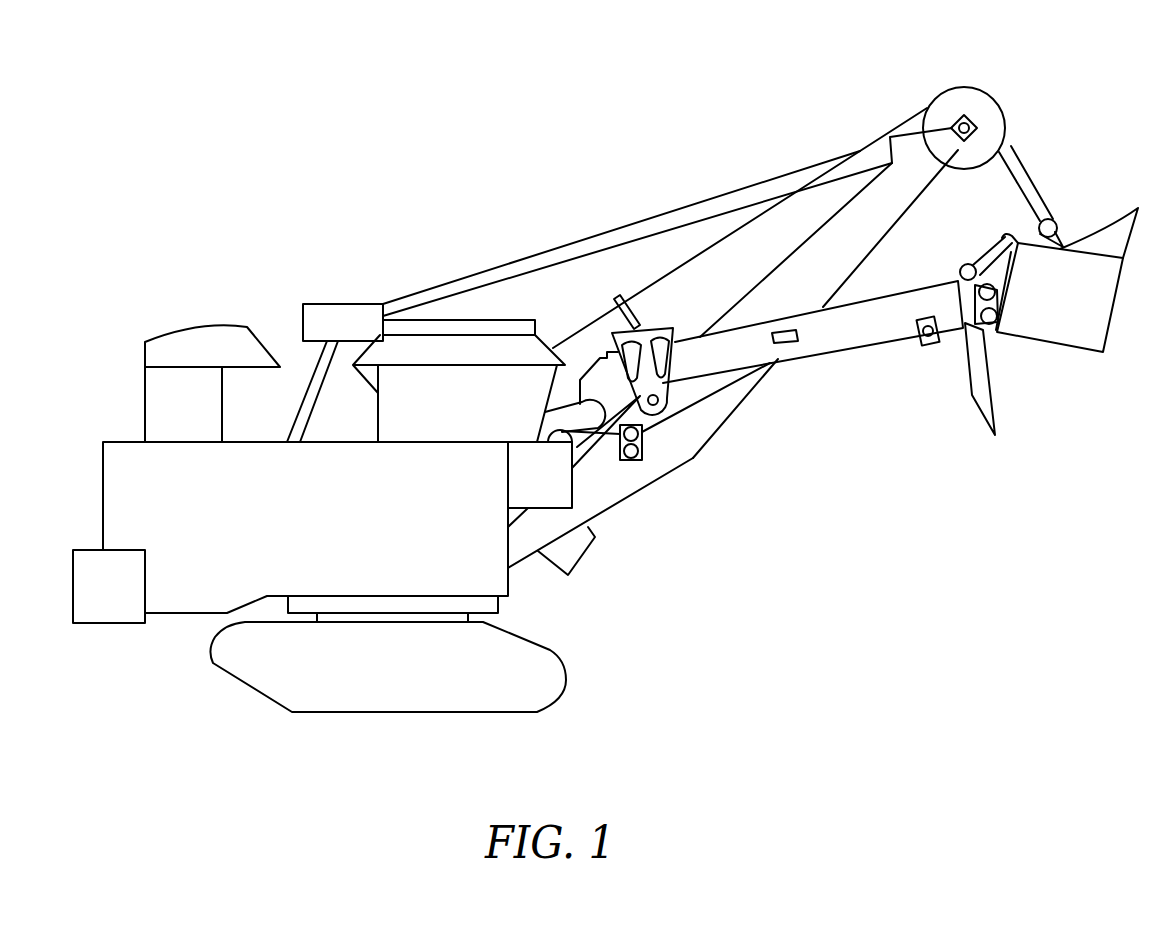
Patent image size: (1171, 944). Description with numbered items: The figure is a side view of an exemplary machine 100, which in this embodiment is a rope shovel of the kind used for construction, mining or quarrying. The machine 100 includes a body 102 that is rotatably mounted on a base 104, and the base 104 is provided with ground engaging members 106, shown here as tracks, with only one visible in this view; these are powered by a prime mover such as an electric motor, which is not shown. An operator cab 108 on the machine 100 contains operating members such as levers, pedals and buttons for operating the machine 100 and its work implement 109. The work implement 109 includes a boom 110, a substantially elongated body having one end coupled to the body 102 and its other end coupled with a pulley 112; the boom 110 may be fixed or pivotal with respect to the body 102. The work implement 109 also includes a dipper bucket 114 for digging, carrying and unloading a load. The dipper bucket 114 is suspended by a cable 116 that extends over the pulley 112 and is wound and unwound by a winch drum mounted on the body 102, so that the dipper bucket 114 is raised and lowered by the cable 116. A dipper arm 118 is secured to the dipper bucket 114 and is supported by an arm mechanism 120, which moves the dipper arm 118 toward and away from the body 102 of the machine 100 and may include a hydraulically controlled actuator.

The machine 100 is at (521, 224).
The body 102 is at (185, 605).
The base 104 is at (568, 628).
The ground engaging members 106 is at (567, 688).
The operator cab 108 is at (460, 337).
The work implement 109 is at (737, 128).
The boom 110 is at (905, 192).
The pulley 112 is at (1002, 92).
The dipper bucket 114 is at (1085, 337).
The cable 116 is at (695, 255).
The dipper arm 118 is at (925, 298).
The arm mechanism 120 is at (673, 328).